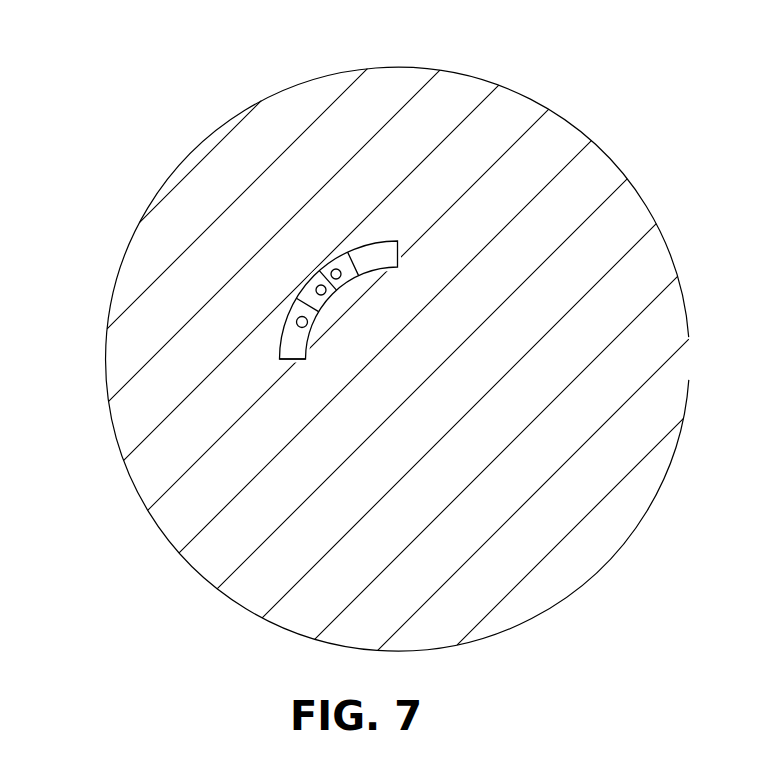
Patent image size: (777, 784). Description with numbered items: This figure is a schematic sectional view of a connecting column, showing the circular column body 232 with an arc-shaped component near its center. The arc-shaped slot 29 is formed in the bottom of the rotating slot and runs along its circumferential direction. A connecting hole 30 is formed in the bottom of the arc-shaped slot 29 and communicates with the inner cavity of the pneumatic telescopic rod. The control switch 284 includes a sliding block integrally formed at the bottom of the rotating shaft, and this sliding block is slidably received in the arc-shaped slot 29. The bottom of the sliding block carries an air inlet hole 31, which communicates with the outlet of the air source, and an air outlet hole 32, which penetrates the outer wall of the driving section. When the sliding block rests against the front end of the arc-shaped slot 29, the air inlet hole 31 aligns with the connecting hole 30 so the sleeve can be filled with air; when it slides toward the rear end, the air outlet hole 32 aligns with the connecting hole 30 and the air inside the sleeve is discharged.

The housing body 232 is at (377, 106).
The control switch 284 is at (354, 261).
The arc-shaped slot 29 is at (286, 351).
The connecting hole 30 is at (296, 319).
The air inlet hole 31 is at (331, 270).
The air outlet hole 32 is at (315, 287).